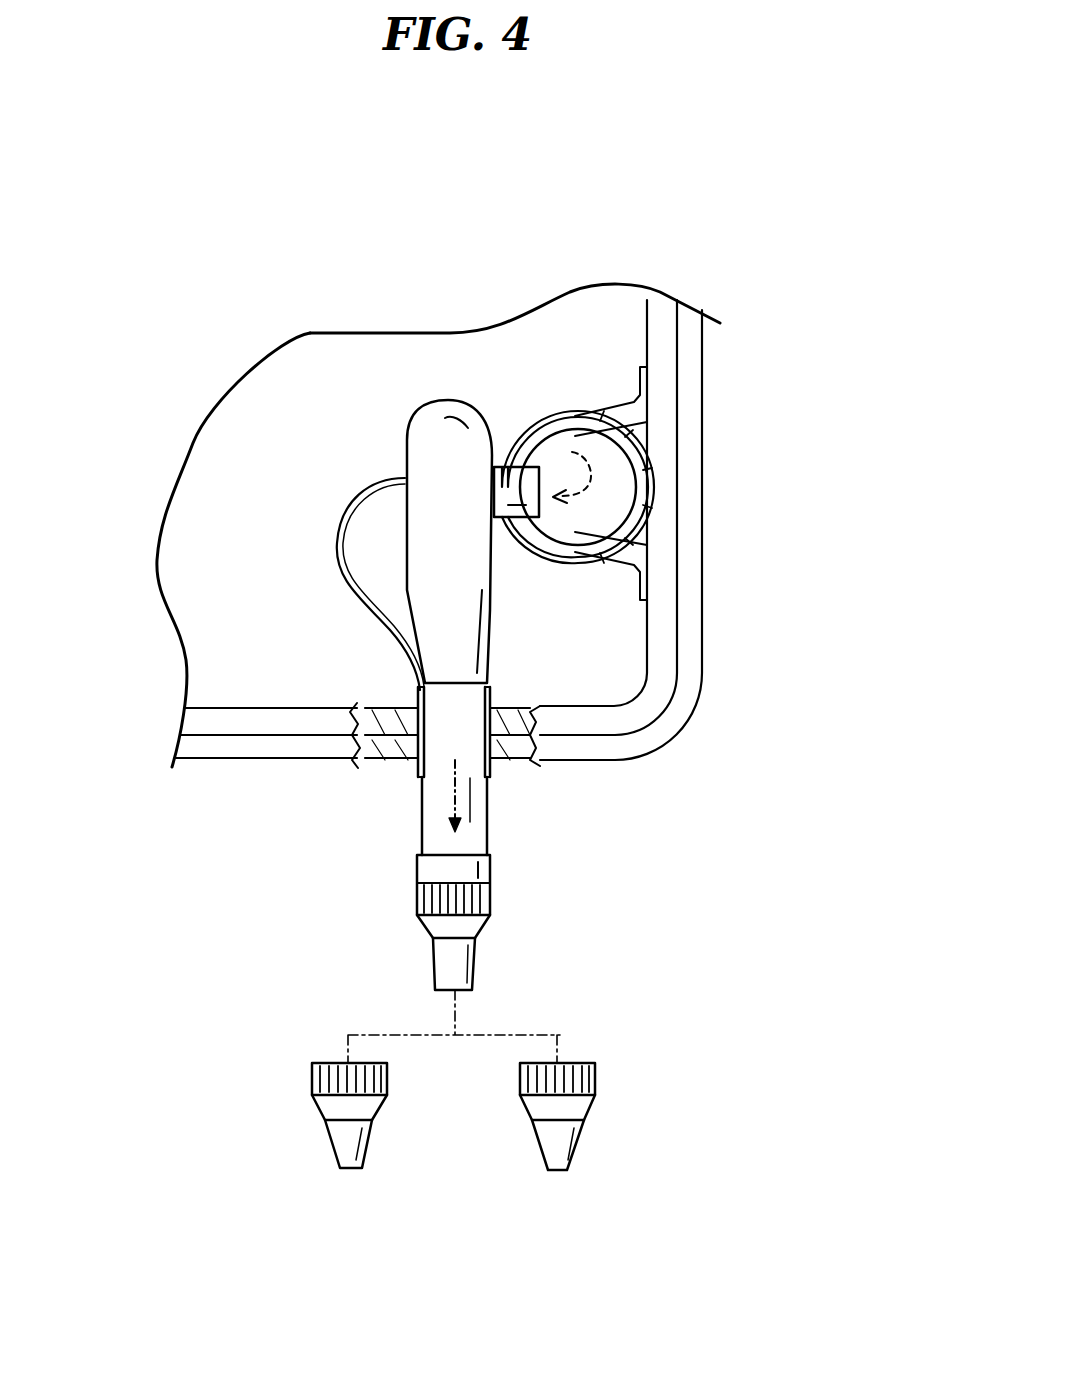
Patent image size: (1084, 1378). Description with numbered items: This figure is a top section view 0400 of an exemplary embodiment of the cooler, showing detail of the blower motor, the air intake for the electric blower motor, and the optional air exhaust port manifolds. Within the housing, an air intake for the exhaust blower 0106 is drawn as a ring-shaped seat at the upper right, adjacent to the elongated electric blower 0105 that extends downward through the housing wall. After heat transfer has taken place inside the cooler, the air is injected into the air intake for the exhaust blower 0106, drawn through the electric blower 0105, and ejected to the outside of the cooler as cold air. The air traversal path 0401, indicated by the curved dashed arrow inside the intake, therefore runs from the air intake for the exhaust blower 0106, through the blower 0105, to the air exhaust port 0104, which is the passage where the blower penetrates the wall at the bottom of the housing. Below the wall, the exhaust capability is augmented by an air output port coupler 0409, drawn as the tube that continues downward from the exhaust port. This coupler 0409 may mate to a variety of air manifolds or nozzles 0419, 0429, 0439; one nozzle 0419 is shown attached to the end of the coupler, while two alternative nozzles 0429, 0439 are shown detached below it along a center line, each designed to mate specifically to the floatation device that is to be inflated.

The top section view 0400 is at (447, 172).
The air traversal path 0401 is at (572, 450).
The air exhaust port 0104 is at (462, 726).
The electric blower 0105 is at (427, 448).
The air intake for the exhaust blower 0106 is at (645, 518).
The air output port coupler 0409 is at (420, 813).
The air manifold/nozzle 0419 is at (418, 917).
The air manifold/nozzle 0429 is at (336, 1170).
The air manifold/nozzle 0439 is at (545, 1172).